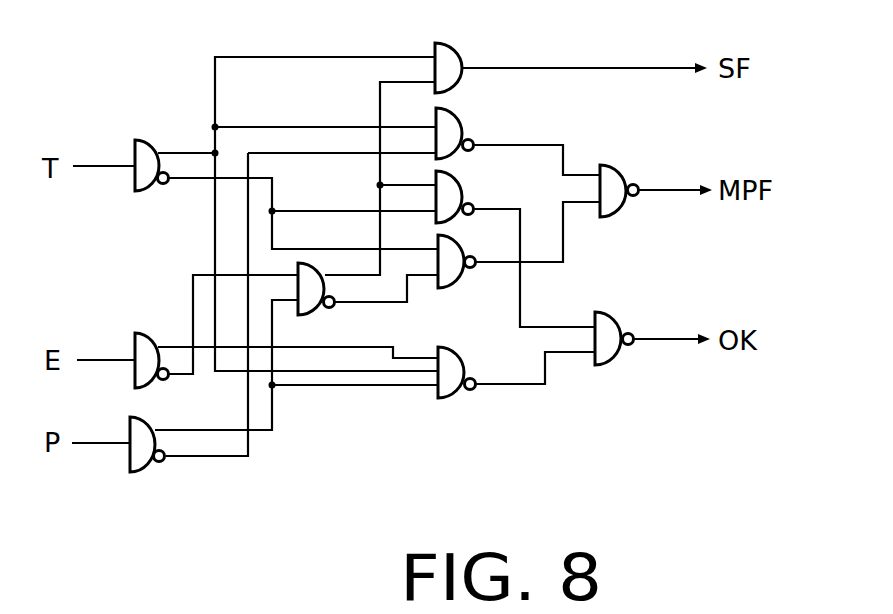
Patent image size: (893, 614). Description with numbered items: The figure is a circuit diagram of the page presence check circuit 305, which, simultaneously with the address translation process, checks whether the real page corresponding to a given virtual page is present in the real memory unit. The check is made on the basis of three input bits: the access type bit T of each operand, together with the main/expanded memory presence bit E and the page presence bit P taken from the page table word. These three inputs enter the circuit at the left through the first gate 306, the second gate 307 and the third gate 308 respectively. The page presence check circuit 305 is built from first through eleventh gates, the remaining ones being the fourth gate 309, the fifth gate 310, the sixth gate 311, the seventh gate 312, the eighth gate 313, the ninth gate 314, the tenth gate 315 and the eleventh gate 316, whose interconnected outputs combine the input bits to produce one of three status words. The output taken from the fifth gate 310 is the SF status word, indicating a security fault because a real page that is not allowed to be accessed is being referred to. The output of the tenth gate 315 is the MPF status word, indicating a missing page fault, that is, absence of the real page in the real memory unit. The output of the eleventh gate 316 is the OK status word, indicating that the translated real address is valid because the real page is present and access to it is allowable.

The page presence check circuit 305 is at (632, 412).
The first gate 306 is at (160, 117).
The second gate 307 is at (142, 333).
The third gate 308 is at (138, 472).
The fourth gate 309 is at (312, 314).
The fifth gate 310 is at (460, 45).
The sixth gate 311 is at (462, 122).
The seventh gate 312 is at (460, 179).
The eighth gate 313 is at (458, 280).
The ninth gate 314 is at (457, 398).
The tenth gate 315 is at (614, 165).
The eleventh gate 316 is at (608, 312).